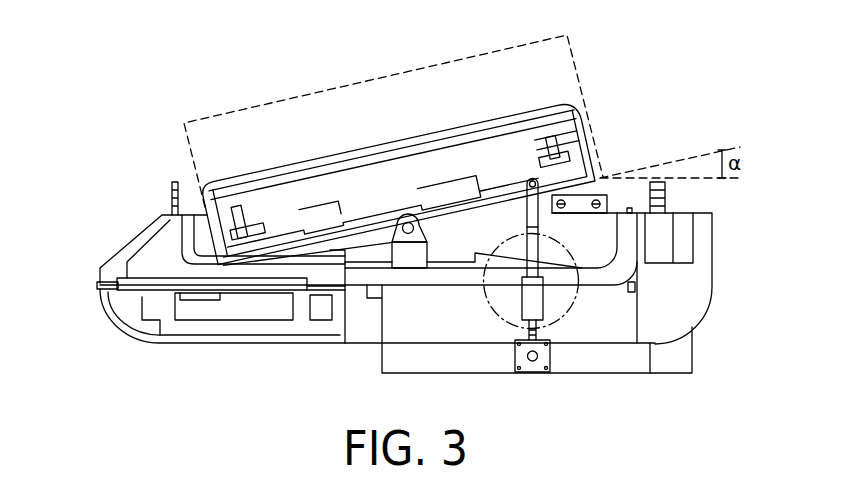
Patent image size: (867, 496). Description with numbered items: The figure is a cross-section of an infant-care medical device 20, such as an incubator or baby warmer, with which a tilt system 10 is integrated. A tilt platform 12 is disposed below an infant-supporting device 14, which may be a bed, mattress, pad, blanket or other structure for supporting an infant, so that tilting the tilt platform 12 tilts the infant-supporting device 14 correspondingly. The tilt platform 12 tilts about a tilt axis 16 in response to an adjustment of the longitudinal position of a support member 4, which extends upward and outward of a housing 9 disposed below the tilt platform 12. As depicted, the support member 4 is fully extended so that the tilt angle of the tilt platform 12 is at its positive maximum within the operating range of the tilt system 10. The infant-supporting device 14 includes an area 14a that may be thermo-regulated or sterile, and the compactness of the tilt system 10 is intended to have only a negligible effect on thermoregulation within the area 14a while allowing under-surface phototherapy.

The support member 4 is at (541, 225).
The housing 9 is at (516, 300).
The tilt system 10 is at (553, 356).
The tilt platform 12 is at (598, 134).
The infant-supporting device 14 is at (449, 119).
The area 14a is at (268, 128).
The tilt axis 16 is at (401, 214).
The infant-care medical device 20 is at (103, 322).